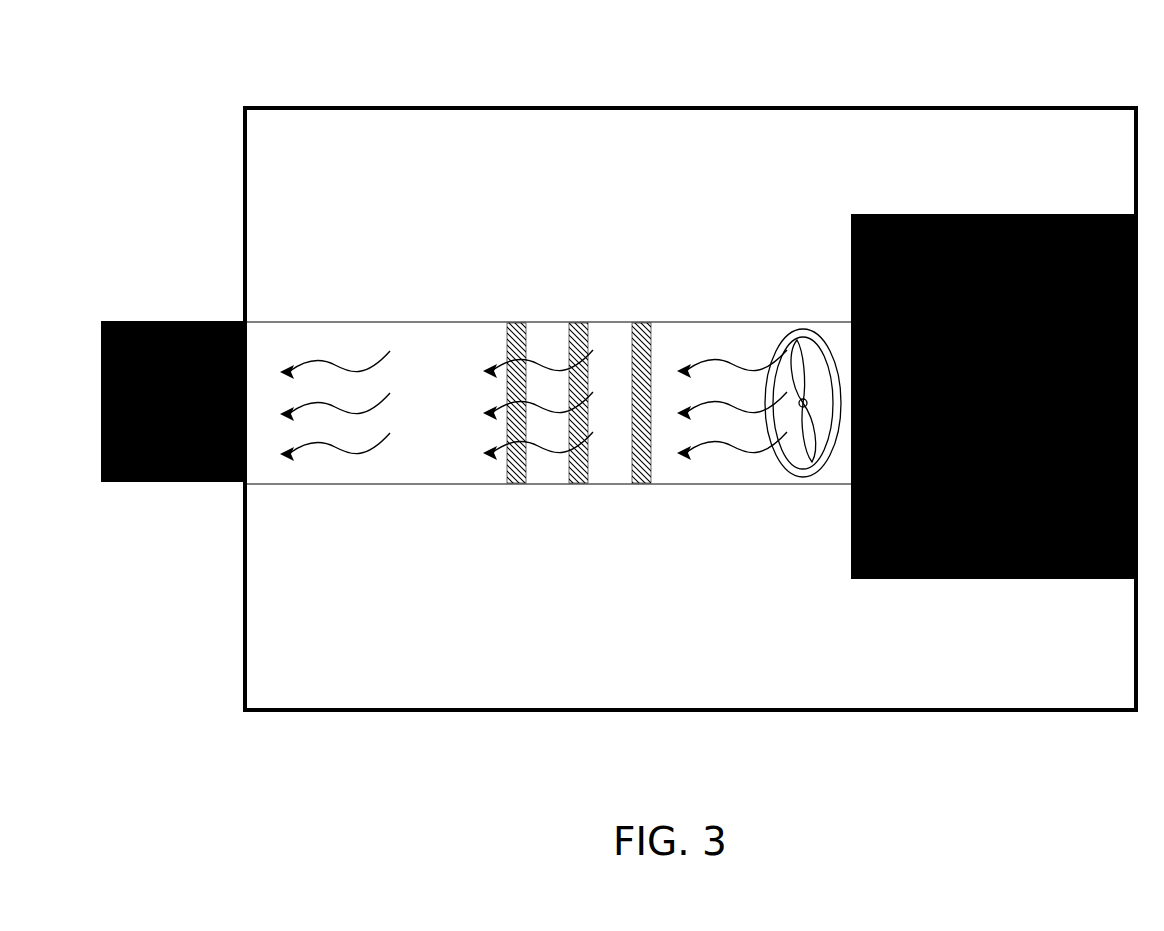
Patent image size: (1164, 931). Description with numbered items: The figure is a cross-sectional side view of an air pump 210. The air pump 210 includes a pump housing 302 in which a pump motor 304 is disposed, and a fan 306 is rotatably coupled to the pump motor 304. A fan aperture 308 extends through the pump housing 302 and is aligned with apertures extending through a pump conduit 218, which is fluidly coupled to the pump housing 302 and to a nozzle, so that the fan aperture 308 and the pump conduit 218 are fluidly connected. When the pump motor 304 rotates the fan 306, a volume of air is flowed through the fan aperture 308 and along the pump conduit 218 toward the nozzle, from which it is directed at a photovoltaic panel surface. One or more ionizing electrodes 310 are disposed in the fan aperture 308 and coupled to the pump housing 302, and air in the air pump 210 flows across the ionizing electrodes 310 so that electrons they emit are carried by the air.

The air pump 210 is at (321, 60).
The pump conduit 218 is at (187, 322).
The pump housing 302 is at (394, 585).
The pump motor 304 is at (1020, 214).
The fan 306 is at (790, 364).
The fan aperture 308 is at (469, 410).
The ionizing electrodes 310 is at (642, 338).